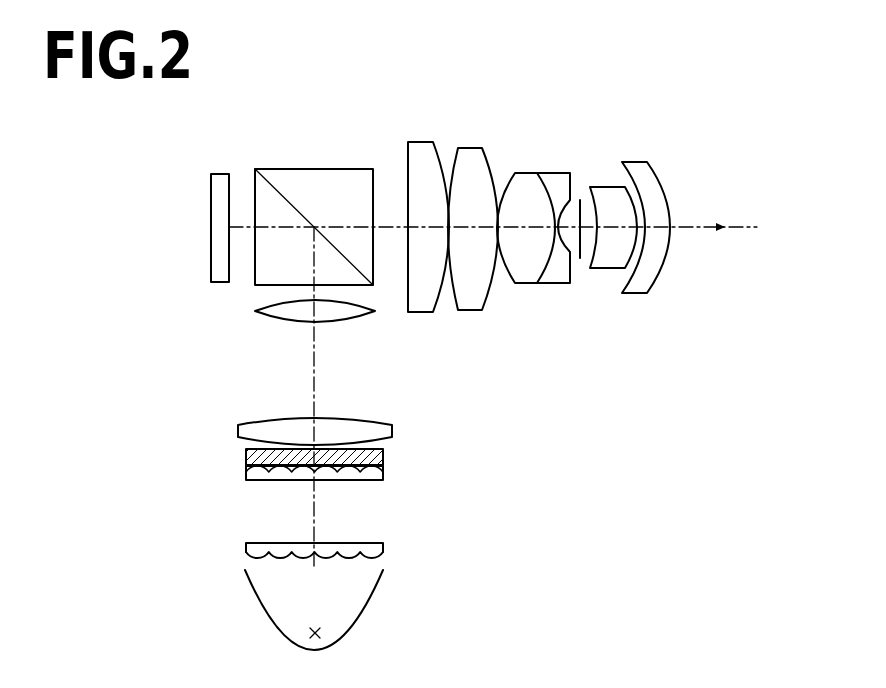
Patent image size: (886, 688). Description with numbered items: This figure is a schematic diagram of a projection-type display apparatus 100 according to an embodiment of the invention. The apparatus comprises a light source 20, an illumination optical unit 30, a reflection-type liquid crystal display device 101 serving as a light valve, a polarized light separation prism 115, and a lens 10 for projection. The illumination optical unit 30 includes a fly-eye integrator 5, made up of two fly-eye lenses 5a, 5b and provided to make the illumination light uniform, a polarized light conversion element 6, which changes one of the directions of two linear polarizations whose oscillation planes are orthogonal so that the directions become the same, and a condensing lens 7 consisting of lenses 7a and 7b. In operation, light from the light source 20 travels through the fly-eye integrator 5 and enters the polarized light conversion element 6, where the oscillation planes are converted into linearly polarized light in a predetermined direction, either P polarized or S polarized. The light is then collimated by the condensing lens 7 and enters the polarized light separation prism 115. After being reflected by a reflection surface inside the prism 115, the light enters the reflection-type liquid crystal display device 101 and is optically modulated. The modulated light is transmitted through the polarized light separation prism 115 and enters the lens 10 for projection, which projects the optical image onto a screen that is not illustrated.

The projection-type display apparatus 100 is at (363, 94).
The lens for projection 10 is at (407, 123).
The polarized light separation prism 115 is at (292, 167).
The reflection-type liquid crystal display device 101 is at (210, 190).
The illumination optical unit 30 is at (125, 360).
The condensing lens 7 is at (164, 338).
The lens 7b is at (254, 312).
The lens 7a is at (238, 430).
The polarized light conversion element 6 is at (246, 456).
The fly-eye integrator 5 is at (164, 476).
The fly-eye lens 5b is at (243, 476).
The fly-eye lens 5a is at (246, 547).
The light source 20 is at (256, 601).